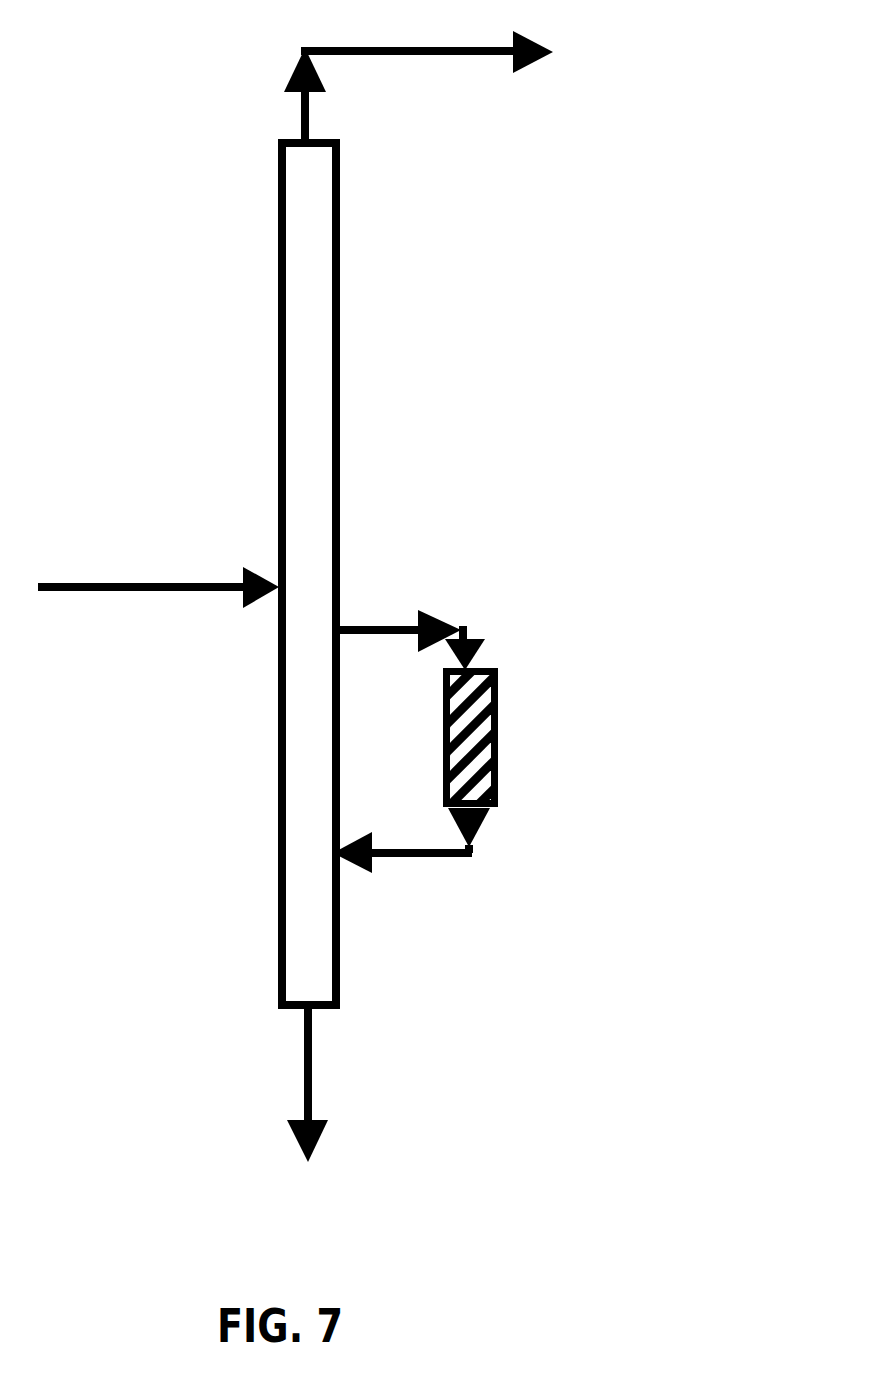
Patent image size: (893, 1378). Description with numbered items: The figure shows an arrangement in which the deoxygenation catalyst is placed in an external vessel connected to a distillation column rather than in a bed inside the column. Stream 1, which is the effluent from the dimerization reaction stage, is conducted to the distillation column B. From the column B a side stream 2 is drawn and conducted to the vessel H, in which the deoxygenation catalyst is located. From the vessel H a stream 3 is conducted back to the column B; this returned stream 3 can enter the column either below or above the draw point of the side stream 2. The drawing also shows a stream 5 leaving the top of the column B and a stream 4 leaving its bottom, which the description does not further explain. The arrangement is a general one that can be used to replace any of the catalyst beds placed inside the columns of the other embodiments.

The stream 1 is at (158, 622).
The side stream 2 is at (412, 612).
The stream 3 is at (411, 879).
The bottoms stream 4 is at (262, 1083).
The overhead stream 5 is at (418, 72).
The distillation column B is at (353, 574).
The vessel H is at (493, 743).